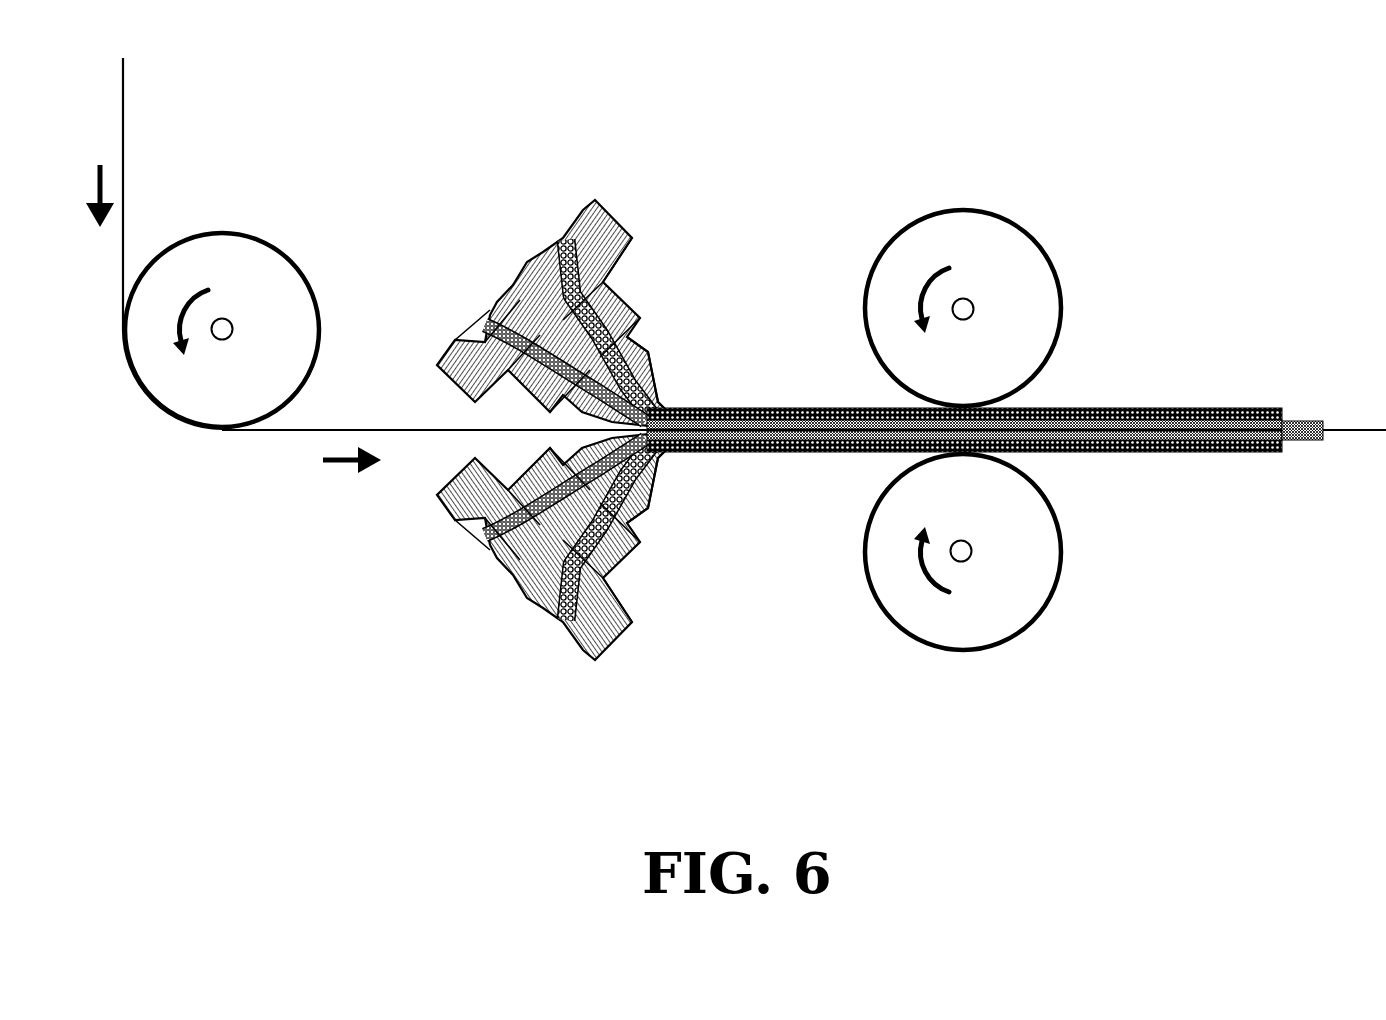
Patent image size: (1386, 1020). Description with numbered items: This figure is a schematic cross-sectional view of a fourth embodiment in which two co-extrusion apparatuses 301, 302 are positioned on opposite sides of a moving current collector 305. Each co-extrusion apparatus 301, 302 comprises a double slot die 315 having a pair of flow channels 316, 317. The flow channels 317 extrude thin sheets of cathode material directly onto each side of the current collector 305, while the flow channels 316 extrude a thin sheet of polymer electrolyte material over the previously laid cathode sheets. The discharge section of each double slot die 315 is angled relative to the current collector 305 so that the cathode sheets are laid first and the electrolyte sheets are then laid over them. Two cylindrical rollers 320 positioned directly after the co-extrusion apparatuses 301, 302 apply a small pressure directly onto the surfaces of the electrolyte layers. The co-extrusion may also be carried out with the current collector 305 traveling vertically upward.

The co-extrusion apparatus 301 is at (549, 655).
The co-extrusion apparatus 302 is at (544, 195).
The current collector 305 is at (1375, 429).
The double slot die 315 is at (640, 371).
The flow channel 316 is at (1235, 411).
The flow channel 317 is at (1152, 419).
The cylindrical roller 320 is at (968, 210).